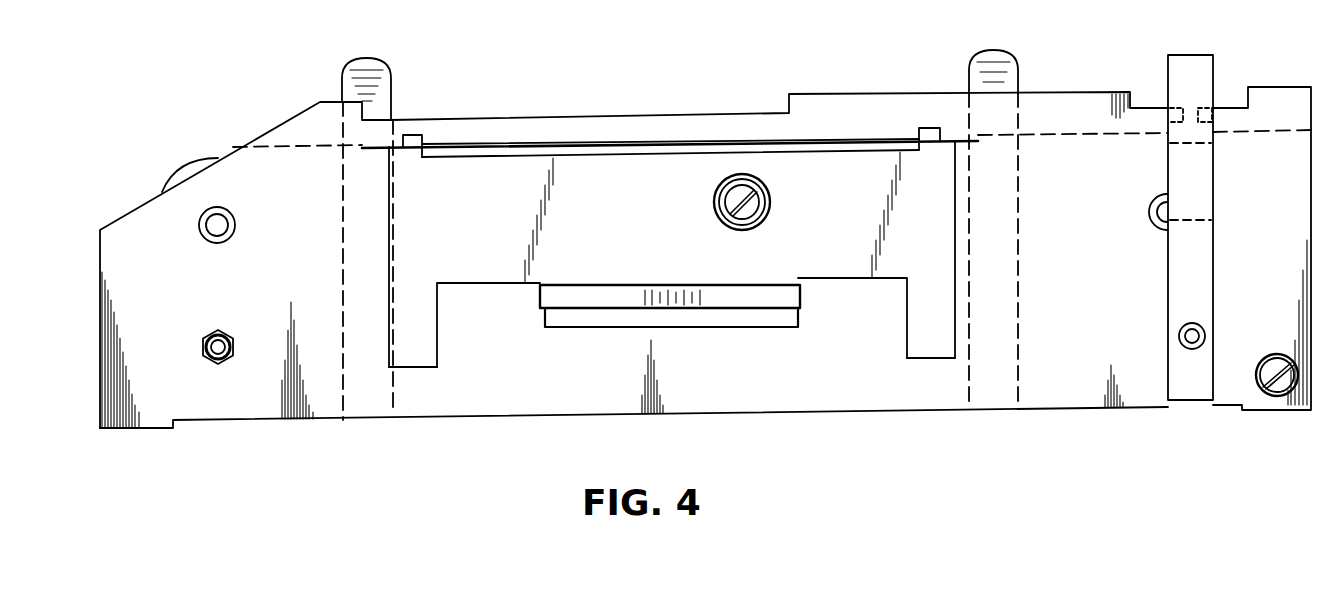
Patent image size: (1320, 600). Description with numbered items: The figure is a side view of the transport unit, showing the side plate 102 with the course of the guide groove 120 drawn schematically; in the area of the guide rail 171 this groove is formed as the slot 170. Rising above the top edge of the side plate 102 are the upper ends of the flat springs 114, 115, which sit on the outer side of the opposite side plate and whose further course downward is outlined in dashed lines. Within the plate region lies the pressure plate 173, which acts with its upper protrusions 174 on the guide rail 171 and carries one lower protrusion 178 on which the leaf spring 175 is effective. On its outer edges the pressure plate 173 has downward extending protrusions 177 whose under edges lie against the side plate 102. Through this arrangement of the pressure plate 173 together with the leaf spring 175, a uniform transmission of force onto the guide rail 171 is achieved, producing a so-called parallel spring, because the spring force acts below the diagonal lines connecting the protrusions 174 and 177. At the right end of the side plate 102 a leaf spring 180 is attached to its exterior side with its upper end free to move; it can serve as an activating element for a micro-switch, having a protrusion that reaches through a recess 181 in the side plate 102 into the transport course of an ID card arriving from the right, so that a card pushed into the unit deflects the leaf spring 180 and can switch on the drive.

The side plate 102 is at (863, 412).
The flat spring 114 is at (1003, 52).
The flat spring 115 is at (375, 59).
The guide groove 120 is at (1084, 135).
The slot 170 is at (826, 140).
The guide rail 171 is at (664, 141).
The pressure plate 173 is at (617, 236).
The upper protrusions 174 is at (418, 133).
The leaf spring 175 is at (720, 285).
The downward extending protrusions 177 is at (425, 368).
The lower protrusion 178 is at (704, 329).
The leaf spring 180 is at (1214, 172).
The recess 181 is at (1205, 102).